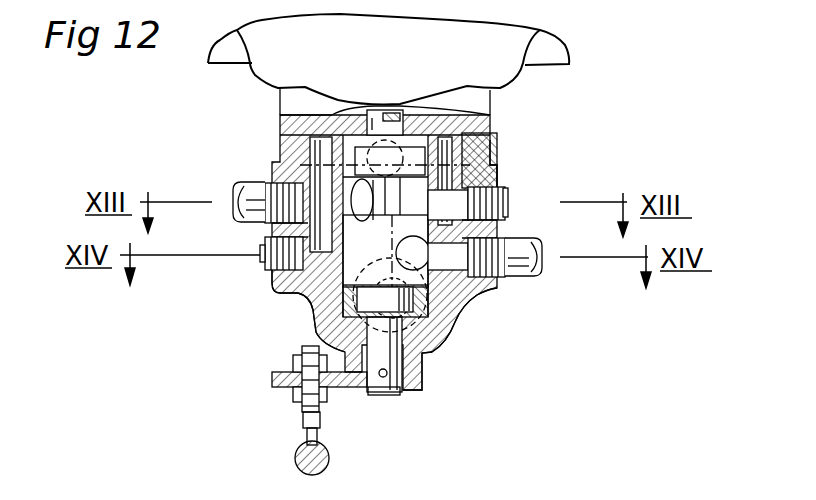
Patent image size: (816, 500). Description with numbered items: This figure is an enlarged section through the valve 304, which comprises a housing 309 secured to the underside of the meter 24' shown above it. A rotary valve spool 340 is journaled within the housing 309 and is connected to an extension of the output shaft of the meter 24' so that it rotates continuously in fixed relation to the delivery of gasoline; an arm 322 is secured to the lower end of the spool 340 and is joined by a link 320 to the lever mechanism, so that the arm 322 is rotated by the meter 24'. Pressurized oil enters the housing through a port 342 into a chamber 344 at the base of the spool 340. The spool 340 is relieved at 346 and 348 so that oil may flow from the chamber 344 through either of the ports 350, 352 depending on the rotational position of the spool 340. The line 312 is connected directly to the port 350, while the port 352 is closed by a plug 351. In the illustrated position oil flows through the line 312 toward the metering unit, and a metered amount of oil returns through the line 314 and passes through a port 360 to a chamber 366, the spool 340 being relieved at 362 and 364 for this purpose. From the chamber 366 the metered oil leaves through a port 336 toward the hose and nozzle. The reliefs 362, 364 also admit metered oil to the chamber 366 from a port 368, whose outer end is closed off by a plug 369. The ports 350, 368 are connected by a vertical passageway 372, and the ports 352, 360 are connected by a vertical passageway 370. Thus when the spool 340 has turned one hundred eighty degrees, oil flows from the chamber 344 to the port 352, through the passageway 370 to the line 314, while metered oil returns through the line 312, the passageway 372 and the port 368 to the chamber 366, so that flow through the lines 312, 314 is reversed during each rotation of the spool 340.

The meter 24' is at (421, 64).
The valve 304 is at (212, 326).
The housing 309 is at (425, 342).
The line 312 is at (531, 271).
The line 314 is at (240, 185).
The link 320 is at (295, 455).
The arm 322 is at (425, 373).
The port 336 is at (335, 124).
The rotary valve spool 340 is at (468, 163).
The port 342 is at (330, 308).
The chamber 344 is at (440, 322).
The relief 346 is at (436, 292).
The relief 348 is at (400, 241).
The port 350 is at (455, 292).
The plug 351 is at (263, 258).
The port 352 is at (300, 298).
The port 360 is at (370, 211).
The relief 362 is at (374, 188).
The relief 364 is at (320, 175).
The chamber 366 is at (462, 136).
The port 368 is at (497, 175).
The plug 369 is at (510, 201).
The vertical passageway 370 is at (275, 234).
The vertical passageway 372 is at (463, 230).